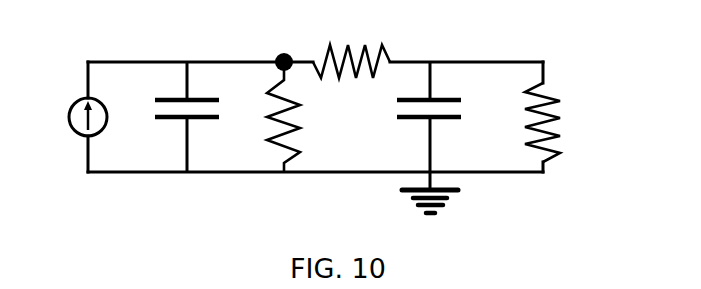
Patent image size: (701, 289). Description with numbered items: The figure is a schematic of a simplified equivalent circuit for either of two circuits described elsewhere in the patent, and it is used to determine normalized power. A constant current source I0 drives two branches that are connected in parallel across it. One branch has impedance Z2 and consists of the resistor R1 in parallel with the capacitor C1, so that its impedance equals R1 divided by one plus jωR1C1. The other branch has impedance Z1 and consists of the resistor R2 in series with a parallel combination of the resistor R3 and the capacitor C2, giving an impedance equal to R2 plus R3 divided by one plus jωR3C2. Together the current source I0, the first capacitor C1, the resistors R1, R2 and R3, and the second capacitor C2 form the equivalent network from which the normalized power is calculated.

The constant current source I0 is at (98, 117).
The capacitor C1 is at (201, 117).
The resistor R1 is at (297, 121).
The resistor R2 is at (351, 44).
The capacitor C2 is at (445, 126).
The resistor R3 is at (563, 122).